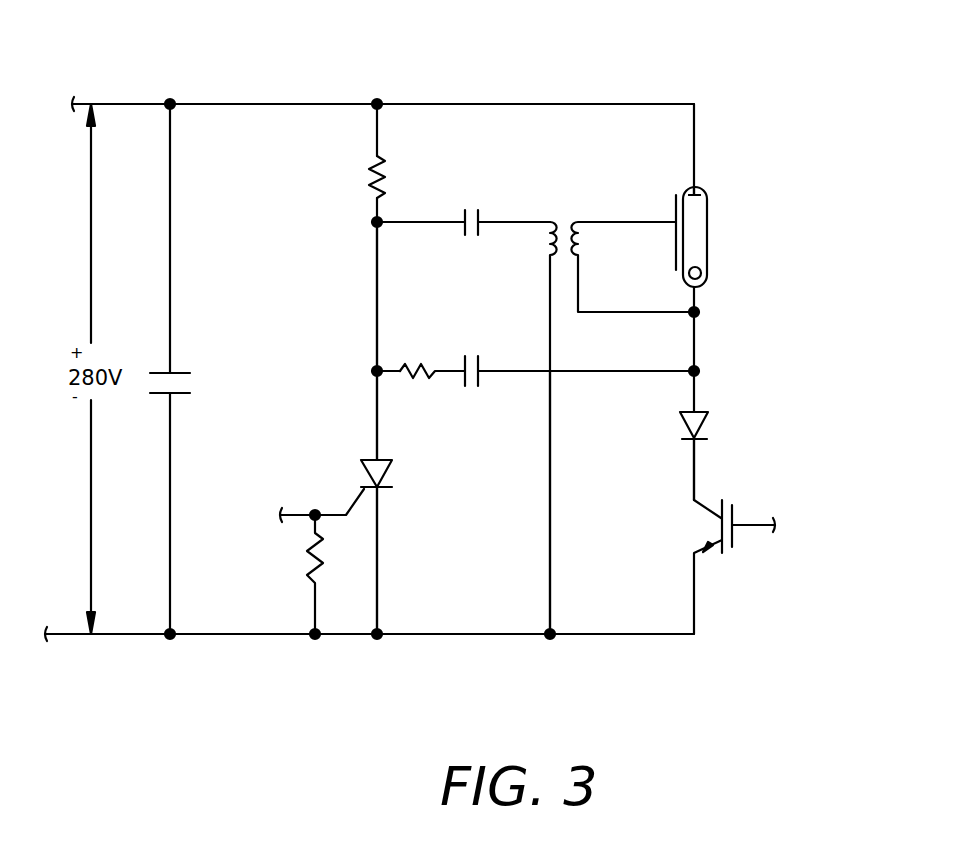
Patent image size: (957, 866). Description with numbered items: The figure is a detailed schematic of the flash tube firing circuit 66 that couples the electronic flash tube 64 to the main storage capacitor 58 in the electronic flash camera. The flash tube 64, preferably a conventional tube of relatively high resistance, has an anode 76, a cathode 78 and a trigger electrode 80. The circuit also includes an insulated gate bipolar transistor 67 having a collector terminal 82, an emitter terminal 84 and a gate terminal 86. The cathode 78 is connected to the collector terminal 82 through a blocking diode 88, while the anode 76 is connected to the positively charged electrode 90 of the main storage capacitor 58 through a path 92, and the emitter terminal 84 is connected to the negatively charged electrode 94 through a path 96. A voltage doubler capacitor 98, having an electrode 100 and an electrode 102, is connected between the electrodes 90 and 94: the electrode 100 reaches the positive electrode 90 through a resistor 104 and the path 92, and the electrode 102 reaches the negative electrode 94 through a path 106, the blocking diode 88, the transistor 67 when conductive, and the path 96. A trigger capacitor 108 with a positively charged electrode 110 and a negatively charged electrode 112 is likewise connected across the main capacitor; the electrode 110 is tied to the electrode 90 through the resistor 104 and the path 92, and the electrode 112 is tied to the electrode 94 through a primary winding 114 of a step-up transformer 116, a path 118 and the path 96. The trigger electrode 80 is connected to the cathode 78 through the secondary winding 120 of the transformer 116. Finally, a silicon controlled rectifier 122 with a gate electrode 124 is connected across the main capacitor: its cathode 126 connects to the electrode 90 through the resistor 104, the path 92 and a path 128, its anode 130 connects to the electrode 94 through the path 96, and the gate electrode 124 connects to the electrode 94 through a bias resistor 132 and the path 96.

The main storage capacitor 58 is at (193, 369).
The flash tube 64 is at (698, 258).
The flash tube firing circuit 66 is at (624, 72).
The insulated gate bipolar transistor 67 is at (740, 536).
The anode 76 is at (698, 193).
The cathode 78 is at (701, 278).
The trigger electrode 80 is at (675, 212).
The collector terminal 82 is at (698, 478).
The emitter terminal 84 is at (693, 582).
The gate terminal 86 is at (755, 525).
The blocking diode 88 is at (722, 420).
The positively charged electrode 90 is at (160, 372).
The path 92 is at (262, 104).
The negatively charged electrode 94 is at (160, 395).
The path 96 is at (262, 636).
The voltage doubler capacitor 98 is at (456, 354).
The electrode 100 is at (463, 378).
The electrode 102 is at (480, 358).
The resistor 104 is at (385, 169).
The path 106 is at (611, 371).
The trigger capacitor 108 is at (463, 213).
The positively charged electrode 110 is at (461, 229).
The negatively charged electrode 112 is at (486, 236).
The primary winding 114 is at (548, 258).
The step-up transformer 116 is at (598, 391).
The path 118 is at (552, 488).
The secondary winding 120 is at (583, 250).
The silicon controlled rectifier 122 is at (378, 502).
The gate electrode 124 is at (358, 502).
The cathode 126 is at (372, 456).
The path 128 is at (379, 314).
The anode 130 is at (390, 492).
The bias resistor 132 is at (307, 565).